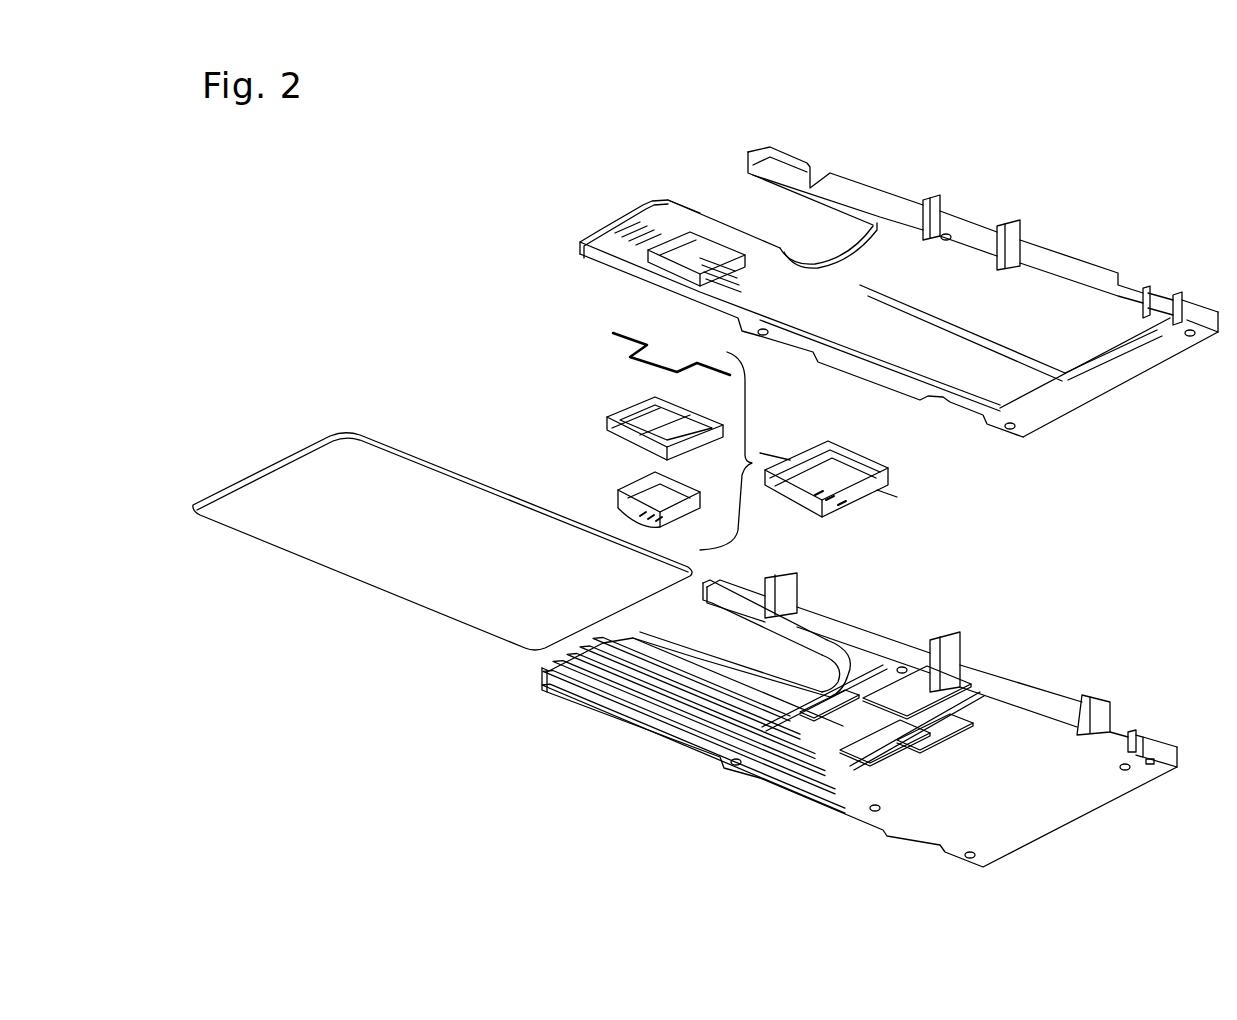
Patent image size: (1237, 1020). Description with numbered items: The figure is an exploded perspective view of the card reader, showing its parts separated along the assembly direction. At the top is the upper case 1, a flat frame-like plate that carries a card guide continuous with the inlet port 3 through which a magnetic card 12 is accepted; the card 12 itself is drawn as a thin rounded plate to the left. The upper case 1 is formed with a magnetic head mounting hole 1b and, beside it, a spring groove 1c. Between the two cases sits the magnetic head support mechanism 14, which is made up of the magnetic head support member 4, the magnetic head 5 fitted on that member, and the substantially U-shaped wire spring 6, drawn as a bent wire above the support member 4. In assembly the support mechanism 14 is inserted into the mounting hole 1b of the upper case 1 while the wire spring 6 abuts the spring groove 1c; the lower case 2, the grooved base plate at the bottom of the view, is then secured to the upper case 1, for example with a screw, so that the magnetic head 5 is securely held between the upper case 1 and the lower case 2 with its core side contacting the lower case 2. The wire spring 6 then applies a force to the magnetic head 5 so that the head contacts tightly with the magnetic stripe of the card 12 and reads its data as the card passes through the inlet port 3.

The upper case 1 is at (727, 230).
The magnetic head mounting hole 1b is at (685, 250).
The spring groove 1c is at (638, 233).
The lower case 2 is at (823, 623).
The inlet port 3 is at (697, 658).
The magnetic head support member 4 is at (637, 410).
The magnetic head 5 is at (637, 488).
The wire spring 6 is at (648, 353).
The magnetic card 12 is at (383, 467).
The magnetic head support mechanism 14 is at (870, 495).